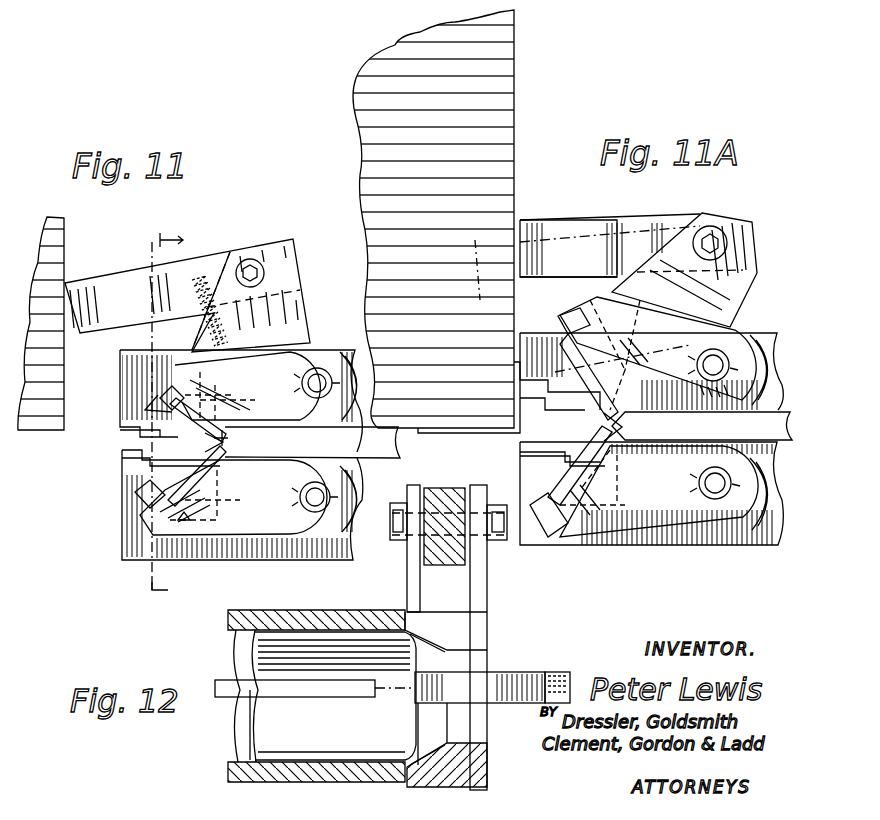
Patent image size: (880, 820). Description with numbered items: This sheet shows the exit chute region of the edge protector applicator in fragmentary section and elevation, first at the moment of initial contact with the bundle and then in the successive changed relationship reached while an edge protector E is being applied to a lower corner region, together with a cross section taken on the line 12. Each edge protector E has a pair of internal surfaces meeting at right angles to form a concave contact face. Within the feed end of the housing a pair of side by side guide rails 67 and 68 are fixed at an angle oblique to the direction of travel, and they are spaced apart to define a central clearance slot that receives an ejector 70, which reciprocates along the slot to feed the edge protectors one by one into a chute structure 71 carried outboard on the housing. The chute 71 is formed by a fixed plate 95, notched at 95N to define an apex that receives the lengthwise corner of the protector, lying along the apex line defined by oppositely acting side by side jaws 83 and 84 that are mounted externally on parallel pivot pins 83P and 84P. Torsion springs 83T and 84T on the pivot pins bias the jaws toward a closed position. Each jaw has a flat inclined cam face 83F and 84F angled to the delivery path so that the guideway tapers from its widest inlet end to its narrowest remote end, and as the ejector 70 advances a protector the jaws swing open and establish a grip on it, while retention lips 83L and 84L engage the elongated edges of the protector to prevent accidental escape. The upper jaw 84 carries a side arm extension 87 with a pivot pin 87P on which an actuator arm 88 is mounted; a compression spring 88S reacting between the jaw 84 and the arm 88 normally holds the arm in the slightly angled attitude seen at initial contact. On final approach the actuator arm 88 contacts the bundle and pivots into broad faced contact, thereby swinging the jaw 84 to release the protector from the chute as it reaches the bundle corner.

In FIG. 11, the section line 12— 12 is at (177, 423).
In FIG. 11, the guide rail 67 is at (138, 426).
In FIG. 11A, the guide rail 67 is at (545, 412).
In FIG. 11, the guide rail 68 is at (150, 462).
In FIG. 11A, the guide rail 68 is at (575, 458).
In FIG. 12, the ejector 70 is at (250, 678).
In FIG. 11, the chute structure 71 is at (182, 522).
In FIG. 12, the chute structure 71 is at (490, 708).
In FIG. 11, the jaw 83 is at (212, 535).
In FIG. 11A, the jaw 83 is at (688, 518).
In FIG. 12, the jaw 83 is at (488, 762).
In FIG. 11, the inclined cam face 83F is at (210, 496).
In FIG. 11A, the inclined cam face 83F is at (611, 482).
In FIG. 12, the inclined cam face 83F is at (432, 750).
In FIG. 11, the retention lip 83L is at (145, 488).
In FIG. 11A, the retention lip 83L is at (545, 540).
In FIG. 11, the pivot pin 83P is at (315, 505).
In FIG. 11A, the pivot pin 83P is at (720, 490).
In FIG. 11, the torsion spring 83T is at (346, 470).
In FIG. 11A, the torsion spring 83T is at (770, 462).
In FIG. 11, the jaw 84 is at (185, 378).
In FIG. 11A, the jaw 84 is at (655, 325).
In FIG. 12, the jaw 84 is at (478, 628).
In FIG. 11, the inclined cam face 84F is at (221, 392).
In FIG. 11A, the inclined cam face 84F is at (630, 355).
In FIG. 12, the inclined cam face 84F is at (428, 652).
In FIG. 11, the retention lip 84L is at (155, 400).
In FIG. 11A, the retention lip 84L is at (562, 315).
In FIG. 11, the pivot pin 84P is at (320, 378).
In FIG. 11A, the pivot pin 84P is at (716, 362).
In FIG. 11, the torsion spring 84T is at (342, 404).
In FIG. 11A, the torsion spring 84T is at (762, 392).
In FIG. 11, the side arm extension 87 is at (300, 312).
In FIG. 11A, the side arm extension 87 is at (742, 252).
In FIG. 12, the side arm extension 87 is at (478, 494).
In FIG. 11, the pivot pin 87P is at (255, 266).
In FIG. 11A, the pivot pin 87P is at (713, 238).
In FIG. 12, the pivot pin 87P is at (490, 540).
In FIG. 11, the actuator arm 88 is at (104, 333).
In FIG. 11A, the actuator arm 88 is at (532, 228).
In FIG. 12, the actuator arm 88 is at (436, 498).
In FIG. 11, the compression spring 88S is at (195, 320).
In FIG. 11, the fixed plate 95 is at (388, 450).
In FIG. 11A, the fixed plate 95 is at (792, 435).
In FIG. 12, the fixed plate 95 is at (512, 678).
In FIG. 11, the notch 95N is at (224, 458).
In FIG. 12, the notch 95N is at (554, 676).
In FIG. 11, the edge protector E is at (226, 443).
In FIG. 11A, the edge protector E is at (626, 422).
In FIG. 12, the edge protector E is at (252, 715).